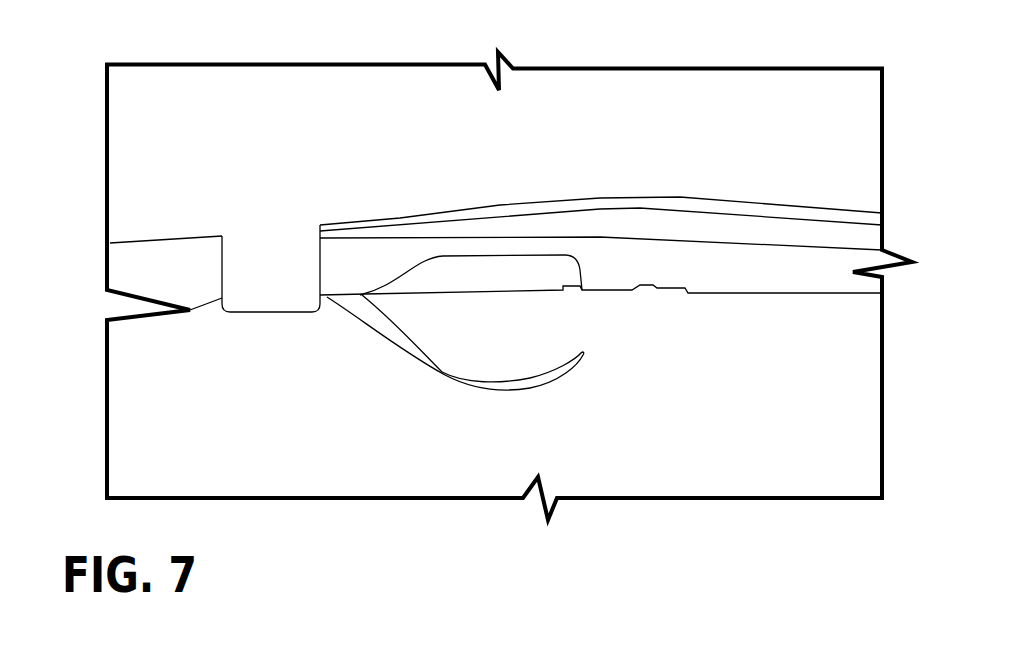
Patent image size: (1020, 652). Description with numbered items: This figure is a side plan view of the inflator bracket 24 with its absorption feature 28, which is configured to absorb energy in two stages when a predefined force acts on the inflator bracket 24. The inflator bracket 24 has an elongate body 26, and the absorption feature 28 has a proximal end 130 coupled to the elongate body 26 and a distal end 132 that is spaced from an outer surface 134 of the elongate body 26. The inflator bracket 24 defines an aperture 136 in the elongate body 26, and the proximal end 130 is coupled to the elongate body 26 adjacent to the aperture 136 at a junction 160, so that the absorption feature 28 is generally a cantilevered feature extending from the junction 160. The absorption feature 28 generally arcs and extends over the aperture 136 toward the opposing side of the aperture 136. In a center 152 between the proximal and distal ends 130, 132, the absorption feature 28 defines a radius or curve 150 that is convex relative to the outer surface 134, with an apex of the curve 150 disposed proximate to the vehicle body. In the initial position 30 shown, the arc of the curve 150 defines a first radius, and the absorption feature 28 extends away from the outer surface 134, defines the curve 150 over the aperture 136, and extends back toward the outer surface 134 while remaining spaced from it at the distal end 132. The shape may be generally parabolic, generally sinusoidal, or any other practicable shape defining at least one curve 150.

The inflator bracket 24 is at (601, 233).
The elongate body 26 is at (173, 257).
The absorption feature 28 is at (430, 363).
The initial position 30 is at (473, 387).
The proximal end 130 is at (353, 298).
The distal end 132 is at (583, 357).
The outer surface 134 is at (730, 294).
The aperture 136 is at (491, 273).
The curve 150 is at (503, 392).
The center 152 is at (535, 385).
The junction 160 is at (330, 298).